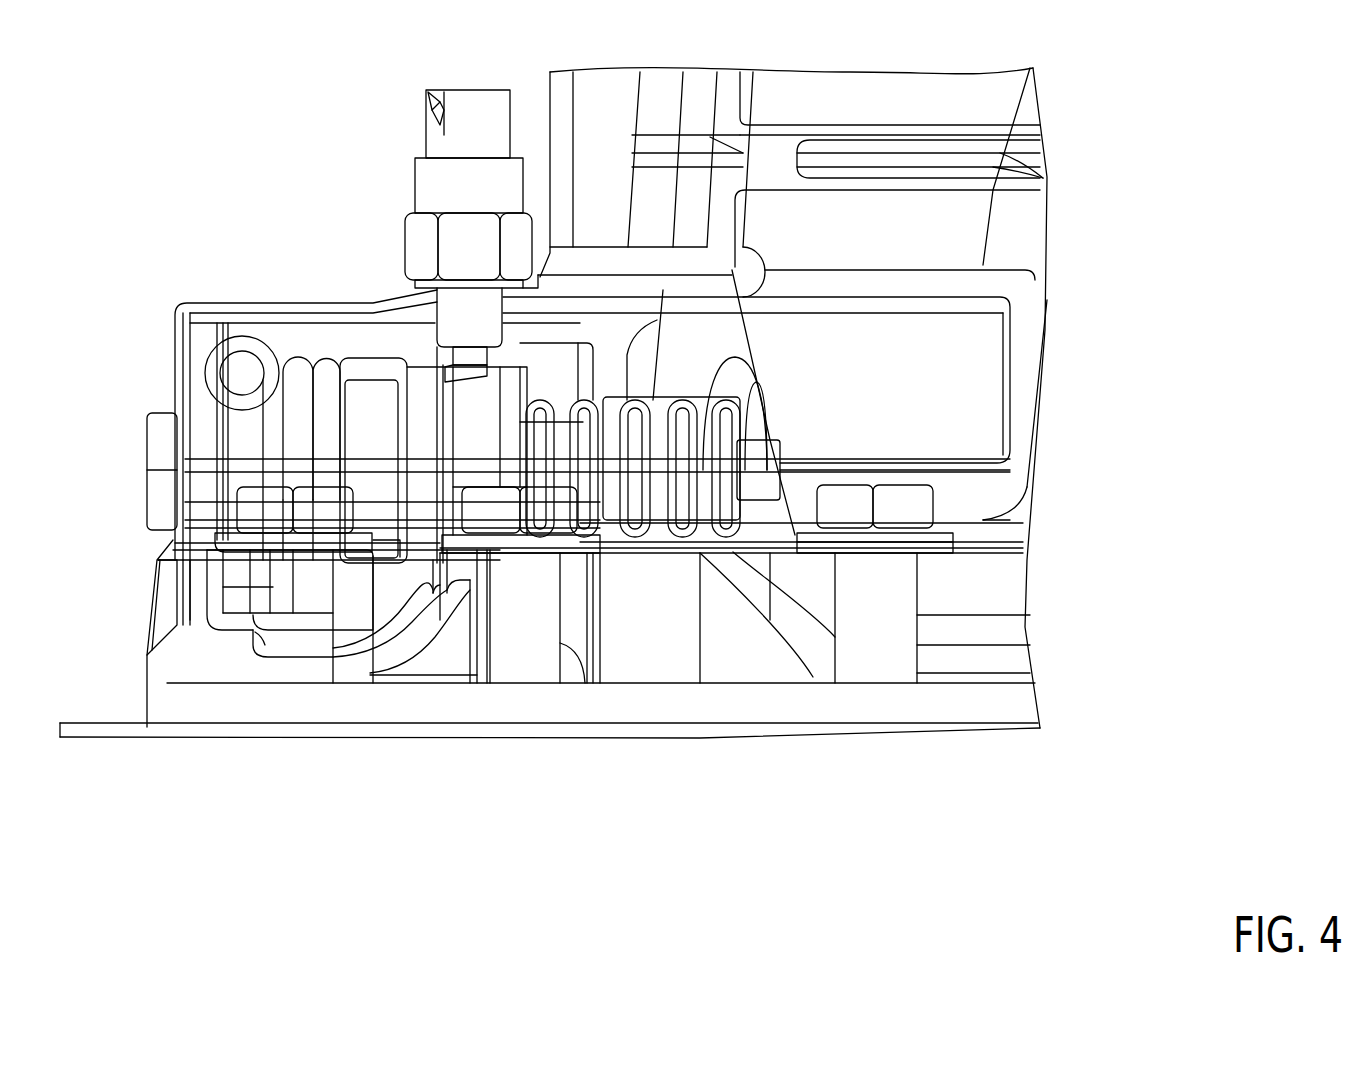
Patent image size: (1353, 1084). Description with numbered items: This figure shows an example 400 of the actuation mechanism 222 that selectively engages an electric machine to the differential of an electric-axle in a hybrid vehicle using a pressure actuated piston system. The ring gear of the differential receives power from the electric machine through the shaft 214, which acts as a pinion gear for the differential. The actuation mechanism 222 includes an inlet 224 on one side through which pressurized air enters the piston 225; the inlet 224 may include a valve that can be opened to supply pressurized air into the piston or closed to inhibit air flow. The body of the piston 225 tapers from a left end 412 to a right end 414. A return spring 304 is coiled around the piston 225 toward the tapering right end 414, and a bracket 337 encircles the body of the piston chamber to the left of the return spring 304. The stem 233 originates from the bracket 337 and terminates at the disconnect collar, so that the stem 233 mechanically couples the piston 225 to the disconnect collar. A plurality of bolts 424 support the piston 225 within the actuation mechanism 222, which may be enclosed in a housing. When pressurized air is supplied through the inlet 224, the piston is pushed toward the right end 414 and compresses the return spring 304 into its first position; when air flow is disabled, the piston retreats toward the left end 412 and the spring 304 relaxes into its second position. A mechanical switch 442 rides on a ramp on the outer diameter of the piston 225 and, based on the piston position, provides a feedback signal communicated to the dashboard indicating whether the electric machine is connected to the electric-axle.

The example of the actuation mechanism 400 is at (1170, 80).
The actuation mechanism 222 is at (303, 106).
The mechanical switch 442 is at (468, 123).
The inlet 224 is at (243, 372).
The left end 412 is at (198, 373).
The piston 225 is at (428, 397).
The bracket 337 is at (494, 441).
The return spring 304 is at (737, 435).
The right end 414 is at (757, 470).
The shaft 214 is at (970, 407).
The bolts 424 is at (282, 670).
The stem 233 is at (405, 673).